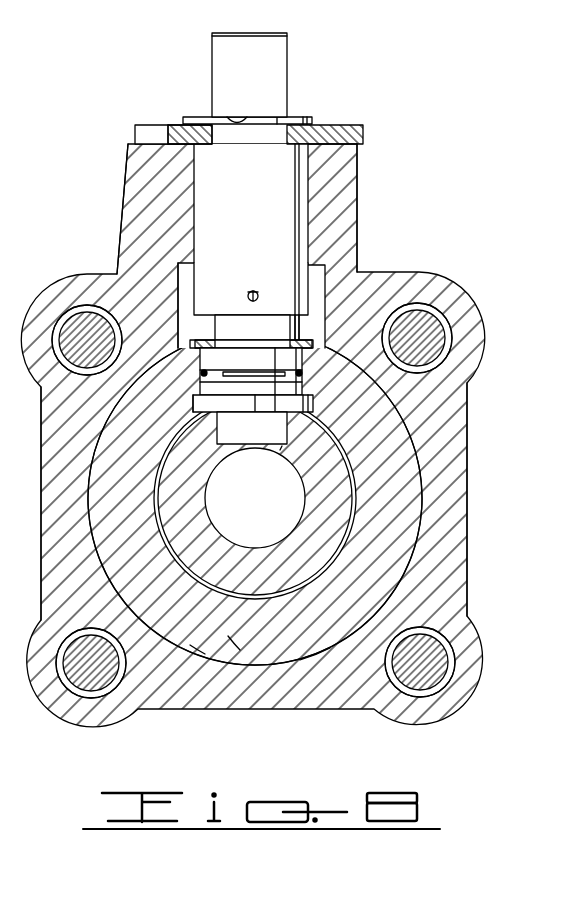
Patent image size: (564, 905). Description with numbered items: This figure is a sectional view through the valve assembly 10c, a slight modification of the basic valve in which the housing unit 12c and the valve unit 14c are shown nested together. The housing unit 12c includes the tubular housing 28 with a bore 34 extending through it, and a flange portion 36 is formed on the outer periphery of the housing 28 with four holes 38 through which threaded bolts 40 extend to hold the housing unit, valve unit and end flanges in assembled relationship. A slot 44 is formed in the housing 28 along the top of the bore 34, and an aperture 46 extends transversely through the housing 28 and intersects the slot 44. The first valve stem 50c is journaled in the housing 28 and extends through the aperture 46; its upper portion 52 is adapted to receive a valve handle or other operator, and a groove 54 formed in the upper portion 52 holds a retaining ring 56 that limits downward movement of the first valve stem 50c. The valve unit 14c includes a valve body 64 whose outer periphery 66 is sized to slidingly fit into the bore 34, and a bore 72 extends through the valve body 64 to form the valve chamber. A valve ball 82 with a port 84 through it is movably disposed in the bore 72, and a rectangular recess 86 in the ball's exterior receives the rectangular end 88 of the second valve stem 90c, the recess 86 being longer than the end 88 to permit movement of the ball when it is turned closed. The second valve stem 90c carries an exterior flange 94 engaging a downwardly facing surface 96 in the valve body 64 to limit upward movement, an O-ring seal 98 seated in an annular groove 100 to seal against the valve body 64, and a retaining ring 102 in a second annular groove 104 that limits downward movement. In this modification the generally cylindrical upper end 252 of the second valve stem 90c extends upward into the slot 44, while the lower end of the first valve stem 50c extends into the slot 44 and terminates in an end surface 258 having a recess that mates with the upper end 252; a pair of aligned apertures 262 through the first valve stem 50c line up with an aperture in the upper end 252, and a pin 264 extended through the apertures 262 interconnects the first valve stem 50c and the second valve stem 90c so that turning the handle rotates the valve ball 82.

The valve assembly 10c is at (370, 130).
The housing unit 12c is at (363, 265).
The valve unit 14c is at (422, 471).
The tubular housing 28 is at (338, 207).
The bore 34 is at (228, 636).
The flange portion 36 is at (58, 388).
The holes 38 is at (87, 305).
The threaded bolts 40 is at (70, 325).
The slot 44 is at (181, 303).
The aperture 46 is at (198, 198).
The first valve stem 50c is at (281, 184).
The upper portion 52 is at (273, 62).
The groove 54 is at (248, 116).
The retaining ring 56 is at (199, 116).
The valve body 64 is at (190, 645).
The outer periphery 66 is at (315, 655).
The bore 72 is at (192, 571).
The valve ball 82 is at (333, 529).
The port 84 is at (236, 498).
The rectangular recess 86 is at (281, 450).
The rectangular end 88 is at (238, 432).
The second valve stem 90c is at (279, 390).
The exterior flange 94 is at (283, 405).
The downwardly facing surface 96 is at (198, 401).
The O-ring seal 98 is at (203, 374).
The annular groove 100 is at (258, 372).
The retaining ring 102 is at (192, 341).
The second annular groove 104 is at (258, 340).
The upper end 252 is at (299, 326).
The end surface 258 is at (206, 316).
The apertures 262 is at (258, 296).
The pin 264 is at (253, 291).